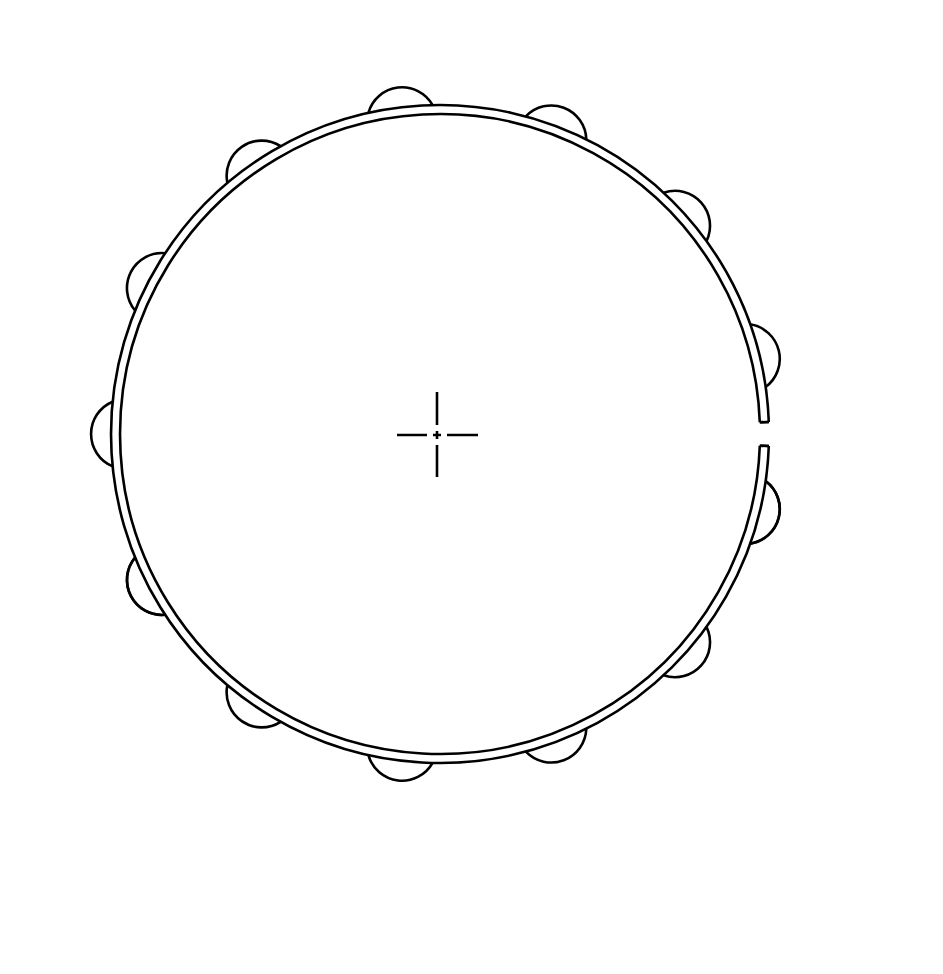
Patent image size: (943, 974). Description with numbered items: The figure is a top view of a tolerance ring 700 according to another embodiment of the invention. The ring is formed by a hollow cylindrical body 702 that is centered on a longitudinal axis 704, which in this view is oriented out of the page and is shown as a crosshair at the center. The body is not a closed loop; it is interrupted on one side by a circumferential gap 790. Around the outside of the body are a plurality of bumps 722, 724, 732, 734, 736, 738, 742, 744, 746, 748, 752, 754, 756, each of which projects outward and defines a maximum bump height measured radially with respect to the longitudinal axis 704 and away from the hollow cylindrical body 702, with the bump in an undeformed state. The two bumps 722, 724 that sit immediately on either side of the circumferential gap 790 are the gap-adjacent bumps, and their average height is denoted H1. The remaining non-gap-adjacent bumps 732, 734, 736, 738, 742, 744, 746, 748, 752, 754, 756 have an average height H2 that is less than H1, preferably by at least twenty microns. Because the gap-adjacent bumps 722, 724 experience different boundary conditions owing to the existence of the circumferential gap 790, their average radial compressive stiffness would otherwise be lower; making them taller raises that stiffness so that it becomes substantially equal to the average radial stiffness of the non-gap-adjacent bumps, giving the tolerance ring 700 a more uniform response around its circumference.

The tolerance ring 700 is at (435, 454).
The hollow cylindrical body 702 is at (452, 434).
The longitudinal axis 704 is at (430, 430).
The circumferential gap 790 is at (800, 427).
The gap-adjacent bump 722 is at (791, 355).
The gap-adjacent bump 724 is at (775, 532).
The non-gap-adjacent bump 732 is at (692, 673).
The non-gap-adjacent bump 734 is at (557, 769).
The non-gap-adjacent bump 736 is at (397, 789).
The non-gap-adjacent bump 738 is at (245, 727).
The non-gap-adjacent bump 742 is at (114, 585).
The non-gap-adjacent bump 744 is at (71, 434).
The non-gap-adjacent bump 746 is at (115, 281).
The non-gap-adjacent bump 748 is at (245, 143).
The non-gap-adjacent bump 752 is at (397, 78).
The non-gap-adjacent bump 754 is at (557, 101).
The non-gap-adjacent bump 756 is at (693, 197).
The average bump height of gap-adjacent bumps H1 is at (776, 512).
The average bump height of non-gap-adjacent bumps H2 is at (127, 593).